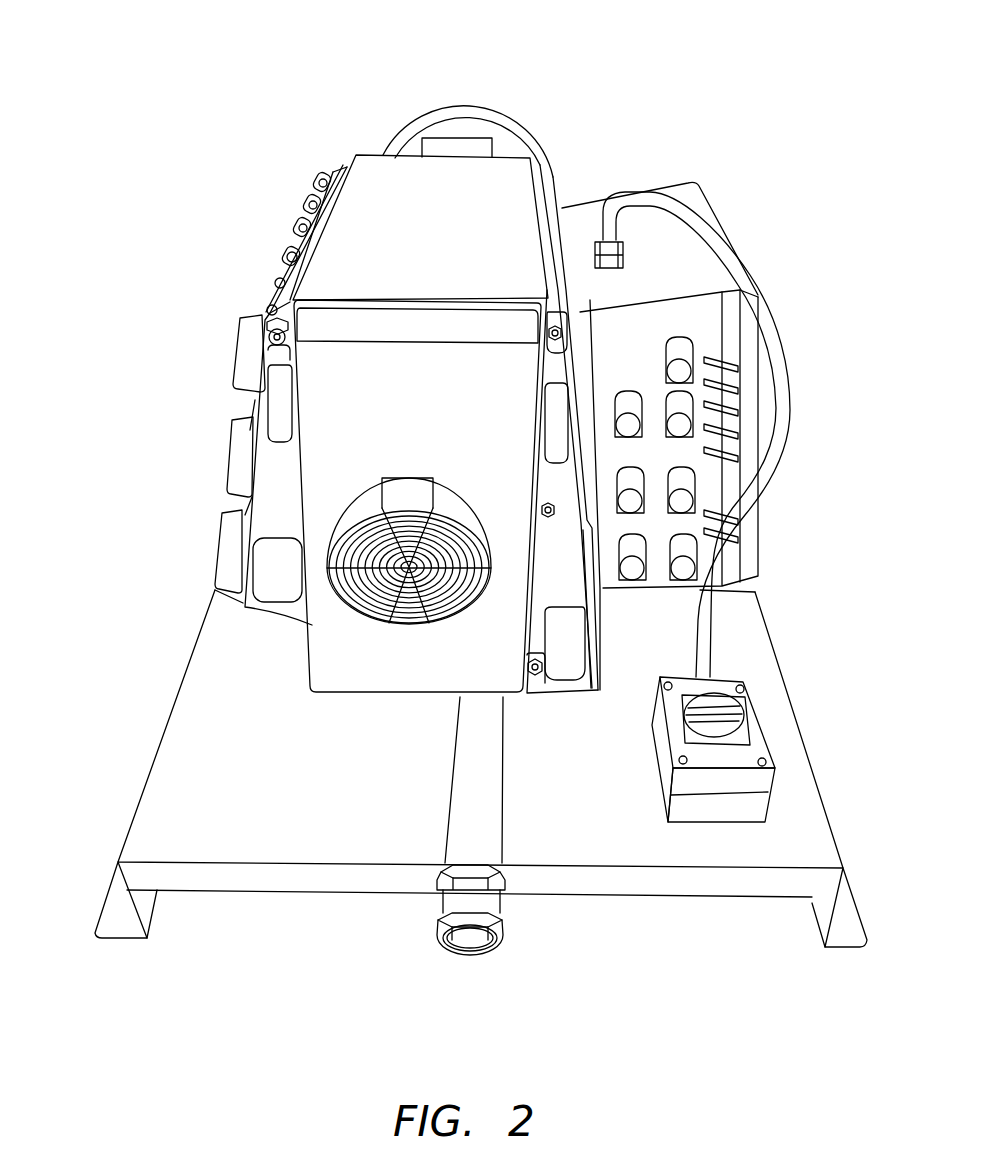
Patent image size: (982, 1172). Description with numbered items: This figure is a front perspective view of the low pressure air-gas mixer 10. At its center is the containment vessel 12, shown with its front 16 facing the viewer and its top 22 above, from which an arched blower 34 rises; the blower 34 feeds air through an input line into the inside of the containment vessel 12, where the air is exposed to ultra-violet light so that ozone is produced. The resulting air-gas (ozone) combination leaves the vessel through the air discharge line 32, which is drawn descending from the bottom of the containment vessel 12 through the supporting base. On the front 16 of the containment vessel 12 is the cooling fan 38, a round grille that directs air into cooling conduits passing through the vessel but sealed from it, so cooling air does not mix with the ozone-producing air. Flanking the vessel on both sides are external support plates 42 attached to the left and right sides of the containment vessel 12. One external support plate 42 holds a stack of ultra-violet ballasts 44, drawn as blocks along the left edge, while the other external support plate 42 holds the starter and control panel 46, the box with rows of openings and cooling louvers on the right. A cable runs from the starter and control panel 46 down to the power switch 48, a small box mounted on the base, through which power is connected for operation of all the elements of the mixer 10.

The low pressure air-gas mixer 10 is at (125, 268).
The containment vessel 12 is at (310, 655).
The front 16 is at (380, 670).
The top 22 is at (444, 243).
The air discharge line 32 is at (455, 752).
The blower 34 is at (457, 108).
The cooling fan 38 is at (357, 483).
The external support plate 42 is at (270, 472).
The ultra-violet ballasts 44 is at (237, 345).
The starter and control panel 46 is at (695, 262).
The power switch 48 is at (690, 738).